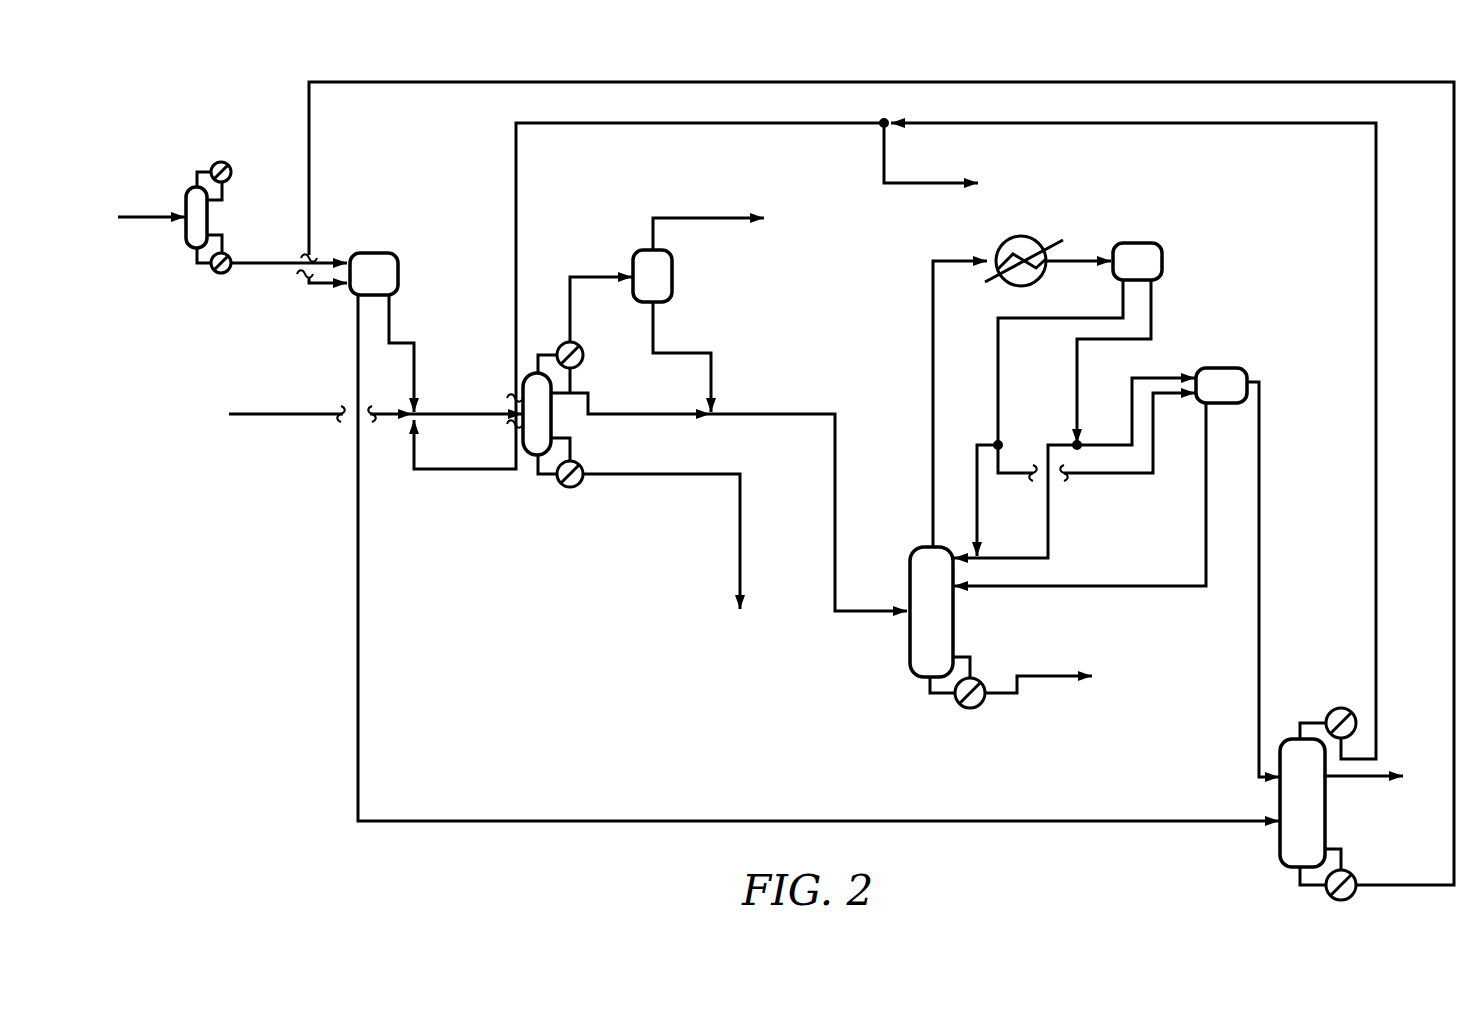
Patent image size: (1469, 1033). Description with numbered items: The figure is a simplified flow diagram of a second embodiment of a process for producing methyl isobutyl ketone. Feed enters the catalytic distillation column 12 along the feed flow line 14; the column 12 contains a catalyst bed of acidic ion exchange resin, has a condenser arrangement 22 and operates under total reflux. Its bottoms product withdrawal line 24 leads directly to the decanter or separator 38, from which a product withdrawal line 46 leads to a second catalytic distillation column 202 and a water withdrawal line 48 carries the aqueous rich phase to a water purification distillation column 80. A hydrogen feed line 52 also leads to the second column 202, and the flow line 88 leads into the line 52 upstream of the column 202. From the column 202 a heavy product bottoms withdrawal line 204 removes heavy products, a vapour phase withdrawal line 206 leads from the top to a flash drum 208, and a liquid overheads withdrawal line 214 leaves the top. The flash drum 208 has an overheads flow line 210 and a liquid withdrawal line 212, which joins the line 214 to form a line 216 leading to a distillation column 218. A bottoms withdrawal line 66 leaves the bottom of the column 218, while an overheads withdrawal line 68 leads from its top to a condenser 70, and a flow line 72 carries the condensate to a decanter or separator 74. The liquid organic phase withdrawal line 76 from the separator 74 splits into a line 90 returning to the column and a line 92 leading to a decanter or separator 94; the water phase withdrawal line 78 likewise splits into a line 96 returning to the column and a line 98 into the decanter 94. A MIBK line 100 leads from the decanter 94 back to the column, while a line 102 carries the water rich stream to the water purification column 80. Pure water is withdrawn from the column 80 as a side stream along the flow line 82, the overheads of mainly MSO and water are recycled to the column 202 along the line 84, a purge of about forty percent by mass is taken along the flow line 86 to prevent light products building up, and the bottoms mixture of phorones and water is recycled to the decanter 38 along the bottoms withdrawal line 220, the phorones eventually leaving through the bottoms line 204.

The catalytic distillation column 12 is at (196, 228).
The feed flow line 14 is at (150, 214).
The condenser arrangement 22 is at (232, 163).
The bottoms product withdrawal line 24 is at (292, 266).
The decanter or separator 38 is at (377, 272).
The product withdrawal line 46 is at (390, 320).
The water withdrawal line 48 is at (357, 712).
The hydrogen feed line 52 is at (308, 417).
The second catalytic distillation column 202 is at (537, 443).
The heavy product bottoms withdrawal line 204 is at (627, 476).
The vapour phase withdrawal line 206 is at (588, 276).
The flash drum 208 is at (674, 277).
The overheads flow line 210 is at (656, 214).
The liquid withdrawal line 212 is at (672, 352).
The liquid overheads withdrawal line 214 is at (683, 412).
The line 216 is at (832, 423).
The distillation column 218 is at (937, 625).
The bottoms withdrawal line 66 is at (1040, 678).
The overheads withdrawal line 68 is at (932, 345).
The condenser 70 is at (1012, 237).
The flow line 72 is at (1073, 260).
The decanter or separator 74 is at (1154, 263).
The liquid organic phase withdrawal line 76 is at (1012, 320).
The water phase withdrawal line 78 is at (1153, 310).
The water purification distillation column 80 is at (1298, 837).
The flow line 82 is at (1383, 775).
The line 84 is at (1377, 368).
The flow line 86 is at (886, 148).
The flow line 88 is at (685, 125).
The line 90 is at (975, 472).
The line 92 is at (1117, 474).
The decanter or separator 94 is at (1225, 388).
The line 96 is at (1050, 490).
The line 98 is at (1155, 377).
The MIBK line 100 is at (1098, 588).
The line 102 is at (1262, 450).
The bottoms withdrawal line 220 is at (457, 81).